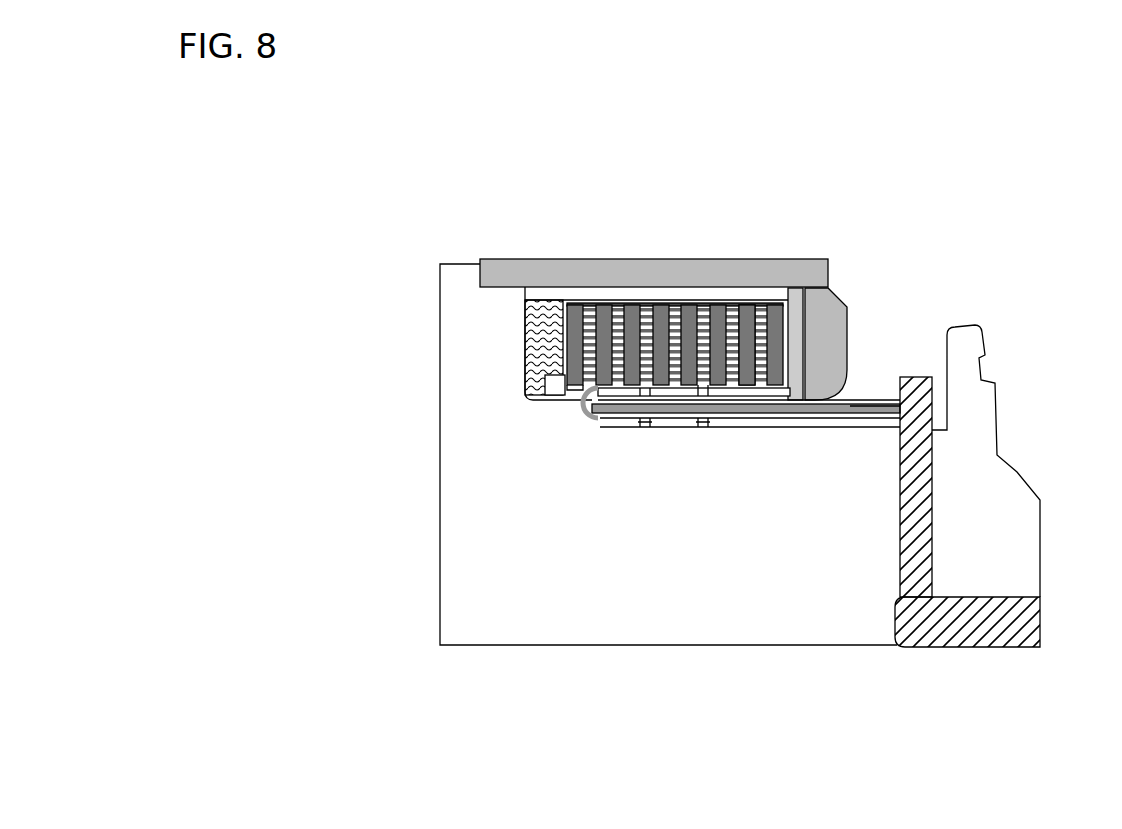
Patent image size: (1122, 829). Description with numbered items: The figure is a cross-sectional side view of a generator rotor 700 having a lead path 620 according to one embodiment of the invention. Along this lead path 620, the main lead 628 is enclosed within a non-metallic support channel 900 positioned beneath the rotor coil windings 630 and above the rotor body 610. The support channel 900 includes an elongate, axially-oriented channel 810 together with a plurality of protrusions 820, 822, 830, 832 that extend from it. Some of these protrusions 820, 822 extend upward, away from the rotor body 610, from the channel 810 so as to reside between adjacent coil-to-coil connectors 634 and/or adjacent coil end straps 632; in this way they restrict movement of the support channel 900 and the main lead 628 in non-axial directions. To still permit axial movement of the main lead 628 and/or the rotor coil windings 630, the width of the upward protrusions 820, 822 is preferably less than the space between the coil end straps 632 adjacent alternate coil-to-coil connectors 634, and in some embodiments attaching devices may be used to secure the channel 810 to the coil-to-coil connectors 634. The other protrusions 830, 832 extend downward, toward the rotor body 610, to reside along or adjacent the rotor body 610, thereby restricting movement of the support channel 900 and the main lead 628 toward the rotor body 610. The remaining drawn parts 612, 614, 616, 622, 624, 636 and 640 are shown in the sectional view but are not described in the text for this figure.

The generator rotor 700 is at (736, 215).
The rotor body 610 is at (766, 561).
The accommodation space 612 is at (1004, 551).
The cover plate 614 is at (593, 272).
The side block 616 is at (825, 320).
The lead path 620 is at (941, 668).
The bottom plate 622 is at (917, 623).
The partition wall 624 is at (920, 448).
The main lead 628 is at (842, 408).
The rotor coil windings 630 is at (656, 300).
The coil end straps 632 is at (747, 323).
The coil-to-coil connectors 634 is at (592, 393).
The cushion member 636 is at (573, 303).
The connector 640 is at (978, 330).
The channel 810 is at (826, 420).
The protrusion 820 is at (643, 388).
The protrusion 822 is at (703, 392).
The protrusion 830 is at (645, 422).
The protrusion 832 is at (700, 428).
The support channel 900 is at (635, 447).